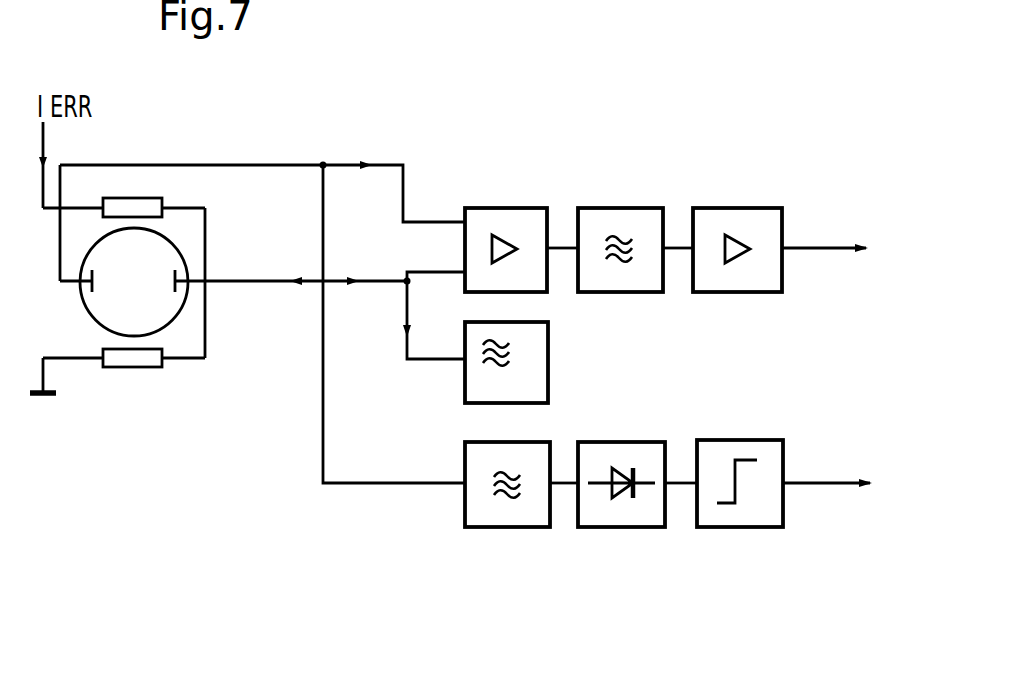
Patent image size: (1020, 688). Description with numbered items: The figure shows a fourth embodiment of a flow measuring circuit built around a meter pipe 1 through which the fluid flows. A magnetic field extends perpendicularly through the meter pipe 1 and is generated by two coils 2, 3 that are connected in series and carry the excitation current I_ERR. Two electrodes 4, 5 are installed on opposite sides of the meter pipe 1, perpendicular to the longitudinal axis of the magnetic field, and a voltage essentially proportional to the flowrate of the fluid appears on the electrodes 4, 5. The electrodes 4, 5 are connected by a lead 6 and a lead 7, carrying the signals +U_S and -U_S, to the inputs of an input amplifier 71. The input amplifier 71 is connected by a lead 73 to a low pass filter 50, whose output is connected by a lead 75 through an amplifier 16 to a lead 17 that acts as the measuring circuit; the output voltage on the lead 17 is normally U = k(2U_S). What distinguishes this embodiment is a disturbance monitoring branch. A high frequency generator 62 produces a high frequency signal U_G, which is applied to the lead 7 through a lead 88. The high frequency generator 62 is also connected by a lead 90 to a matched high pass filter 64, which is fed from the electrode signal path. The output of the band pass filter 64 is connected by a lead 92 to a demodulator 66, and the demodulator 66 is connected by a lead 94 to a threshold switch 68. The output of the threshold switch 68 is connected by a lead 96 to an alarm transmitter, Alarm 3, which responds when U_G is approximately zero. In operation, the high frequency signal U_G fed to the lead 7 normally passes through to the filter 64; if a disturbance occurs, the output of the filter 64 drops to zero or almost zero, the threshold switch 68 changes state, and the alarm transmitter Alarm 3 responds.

The meter pipe 1 is at (97, 323).
The coil 2 is at (165, 199).
The coil 3 is at (122, 368).
The electrode 4 is at (84, 296).
The electrode 5 is at (181, 265).
The lead 6 is at (146, 165).
The lead 7 is at (264, 278).
The amplifier 16 is at (744, 208).
The lead 17 is at (828, 248).
The low pass filter 50 is at (613, 208).
The high frequency generator 62 is at (548, 357).
The high pass filter 64 is at (506, 527).
The demodulator 66 is at (615, 527).
The threshold switch 68 is at (759, 440).
The input amplifier 71 is at (500, 205).
The lead 73 is at (552, 246).
The lead 75 is at (673, 246).
The lead 88 is at (405, 356).
The lead 90 is at (323, 358).
The lead 92 is at (557, 480).
The lead 94 is at (683, 483).
The lead 96 is at (815, 483).